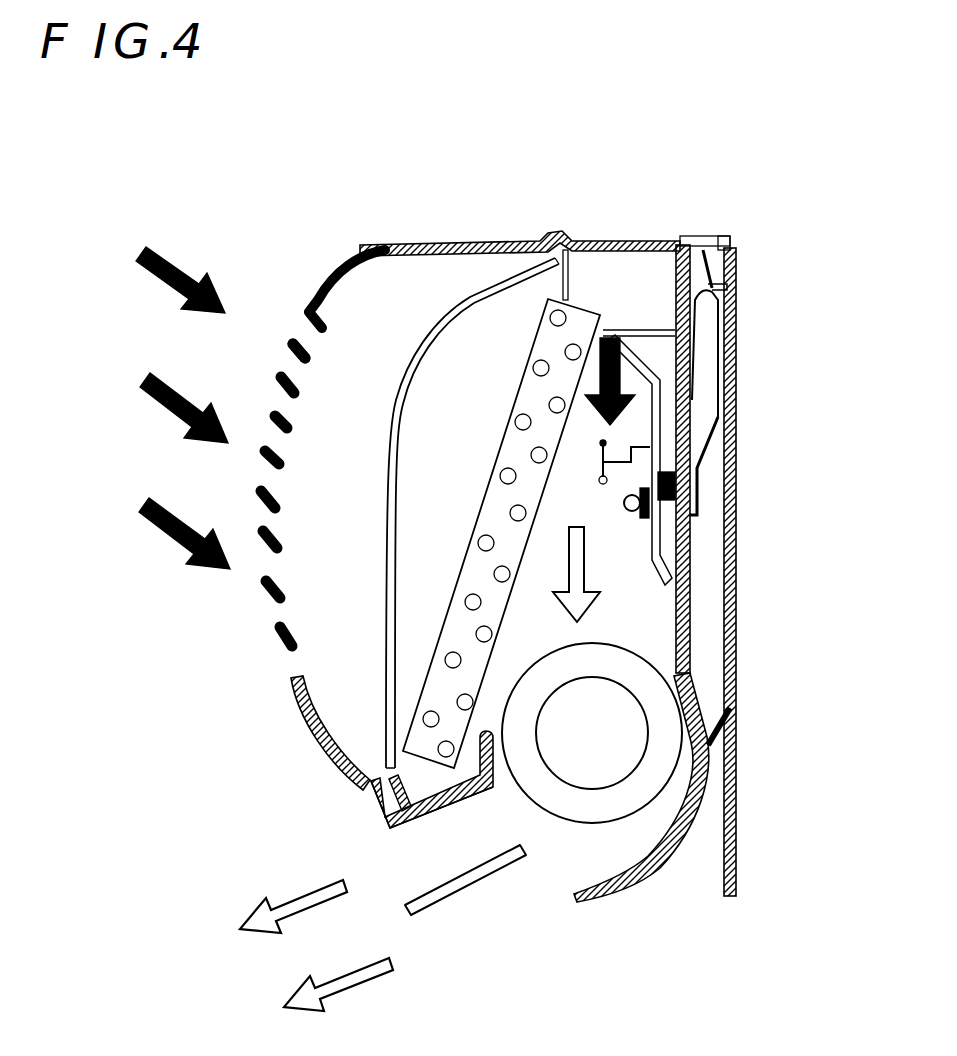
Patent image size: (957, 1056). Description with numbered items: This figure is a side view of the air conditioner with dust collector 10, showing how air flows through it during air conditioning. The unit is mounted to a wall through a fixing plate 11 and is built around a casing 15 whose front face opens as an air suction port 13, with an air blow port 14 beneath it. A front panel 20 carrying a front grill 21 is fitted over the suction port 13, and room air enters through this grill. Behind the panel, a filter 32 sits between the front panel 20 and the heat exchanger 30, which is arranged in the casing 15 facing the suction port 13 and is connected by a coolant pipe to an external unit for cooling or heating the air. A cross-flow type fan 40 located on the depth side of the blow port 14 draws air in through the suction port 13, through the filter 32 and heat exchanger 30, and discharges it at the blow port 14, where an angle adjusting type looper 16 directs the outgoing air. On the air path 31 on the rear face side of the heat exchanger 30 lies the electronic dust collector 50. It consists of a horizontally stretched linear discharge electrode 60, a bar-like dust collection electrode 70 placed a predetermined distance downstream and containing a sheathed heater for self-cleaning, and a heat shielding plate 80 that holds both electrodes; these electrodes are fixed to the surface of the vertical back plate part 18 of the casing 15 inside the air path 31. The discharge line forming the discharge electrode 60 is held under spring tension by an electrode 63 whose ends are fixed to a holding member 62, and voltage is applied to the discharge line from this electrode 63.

The air conditioner with dust collector 10 is at (282, 143).
The fixing plate 11 is at (735, 495).
The air suction port 13 is at (376, 466).
The air blow port 14 is at (510, 882).
The casing 15 is at (660, 240).
The angle adjusting type looper 16 is at (440, 905).
The vertical back plate part 18 is at (689, 583).
The front panel 20 is at (515, 242).
The front grill 21 is at (273, 648).
The heat exchanger 30 is at (580, 318).
The air path 31 is at (547, 553).
The filter 32 is at (452, 310).
The cross-flow type fan 40 is at (595, 822).
The electronic dust collector 50 is at (579, 497).
The discharge electrode 60 is at (605, 485).
The holding member 62 is at (640, 437).
The electrode 63 is at (610, 440).
The dust collection electrode 70 is at (640, 512).
The heat shielding plate 80 is at (640, 353).